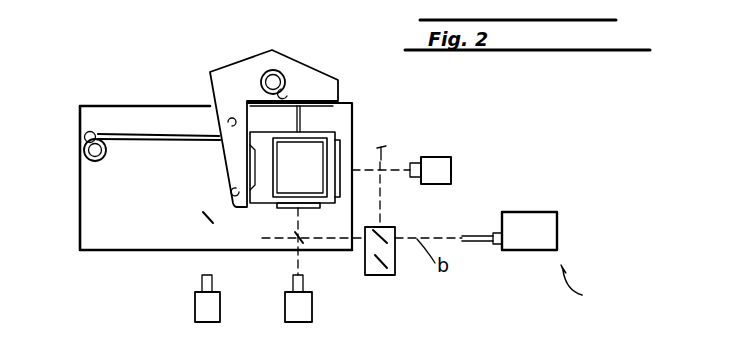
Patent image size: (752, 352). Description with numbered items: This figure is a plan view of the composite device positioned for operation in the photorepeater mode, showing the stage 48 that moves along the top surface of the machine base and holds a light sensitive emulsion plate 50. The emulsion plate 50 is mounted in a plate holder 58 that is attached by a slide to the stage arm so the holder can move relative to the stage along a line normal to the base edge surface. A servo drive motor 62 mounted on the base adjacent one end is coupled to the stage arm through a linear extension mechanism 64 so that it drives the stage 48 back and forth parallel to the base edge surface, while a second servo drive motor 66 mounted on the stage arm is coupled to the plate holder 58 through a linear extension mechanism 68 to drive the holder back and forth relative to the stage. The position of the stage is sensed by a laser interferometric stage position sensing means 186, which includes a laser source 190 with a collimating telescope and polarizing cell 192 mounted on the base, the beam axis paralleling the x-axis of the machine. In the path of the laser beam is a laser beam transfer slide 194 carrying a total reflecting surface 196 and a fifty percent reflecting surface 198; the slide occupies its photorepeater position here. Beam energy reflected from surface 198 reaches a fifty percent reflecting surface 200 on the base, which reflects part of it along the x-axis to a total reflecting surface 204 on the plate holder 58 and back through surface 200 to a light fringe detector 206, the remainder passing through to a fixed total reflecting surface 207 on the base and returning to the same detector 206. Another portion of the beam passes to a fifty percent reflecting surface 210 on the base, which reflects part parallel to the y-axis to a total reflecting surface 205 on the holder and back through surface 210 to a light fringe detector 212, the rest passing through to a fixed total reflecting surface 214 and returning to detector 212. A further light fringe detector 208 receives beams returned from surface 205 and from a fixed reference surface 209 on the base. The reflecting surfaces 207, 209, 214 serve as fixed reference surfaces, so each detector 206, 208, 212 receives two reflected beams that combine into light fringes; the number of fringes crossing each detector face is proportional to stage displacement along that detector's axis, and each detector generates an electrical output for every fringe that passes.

The stage 48 is at (338, 91).
The light sensitive emulsion plate 50 is at (306, 178).
The emulsion plate holder 58 is at (323, 132).
The servo drive motor 62 is at (83, 158).
The linear extension mechanism 64 is at (84, 136).
The servo drive motor 66 is at (272, 70).
The linear extension mechanism 68 is at (289, 86).
The stage position sensing means 186 is at (592, 284).
The laser source 190 is at (536, 215).
The collimating telescope and polarizing cell 192 is at (478, 245).
The laser beam transfer slide 194 is at (395, 277).
The total reflecting surface 196 is at (365, 279).
The 50 percent reflecting surface 198 is at (375, 237).
The 50 percent reflecting surface 200 is at (382, 167).
The total reflecting surface 204 is at (337, 150).
The total reflecting surface 205 is at (275, 209).
The light fringe detector 206 is at (445, 157).
The total reflecting surface 207 is at (393, 178).
The light fringe detector 208 is at (200, 301).
The total reflecting surface 209 is at (187, 212).
The 50 percent reflecting surface 210 is at (300, 243).
The light fringe detector 212 is at (312, 312).
The total reflecting surface 214 is at (278, 233).